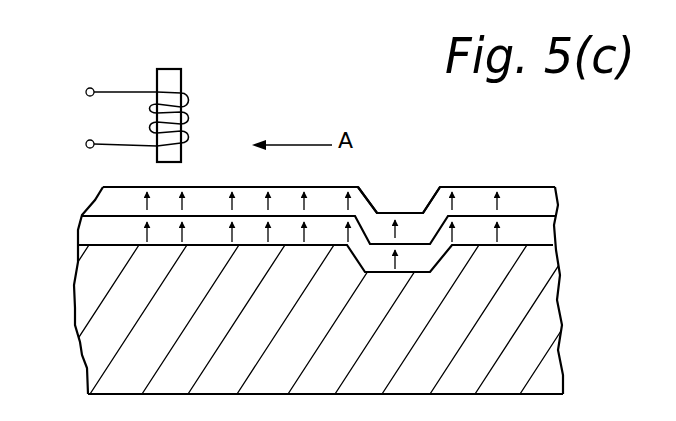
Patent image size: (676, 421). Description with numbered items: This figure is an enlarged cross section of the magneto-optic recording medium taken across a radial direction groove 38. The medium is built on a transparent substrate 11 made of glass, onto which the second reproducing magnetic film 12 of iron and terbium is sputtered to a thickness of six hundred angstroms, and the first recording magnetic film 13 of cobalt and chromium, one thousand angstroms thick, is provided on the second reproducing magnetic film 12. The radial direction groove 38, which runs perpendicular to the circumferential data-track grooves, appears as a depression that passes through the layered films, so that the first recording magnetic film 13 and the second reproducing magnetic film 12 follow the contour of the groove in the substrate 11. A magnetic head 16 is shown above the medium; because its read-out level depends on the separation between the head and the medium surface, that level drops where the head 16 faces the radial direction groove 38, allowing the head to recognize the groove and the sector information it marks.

The transparent substrate 11 is at (540, 316).
The second reproducing magnetic film 12 is at (535, 196).
The first recording magnetic film 13 is at (532, 228).
The magnetic head 16 is at (183, 81).
The radial direction groove 38 is at (393, 207).